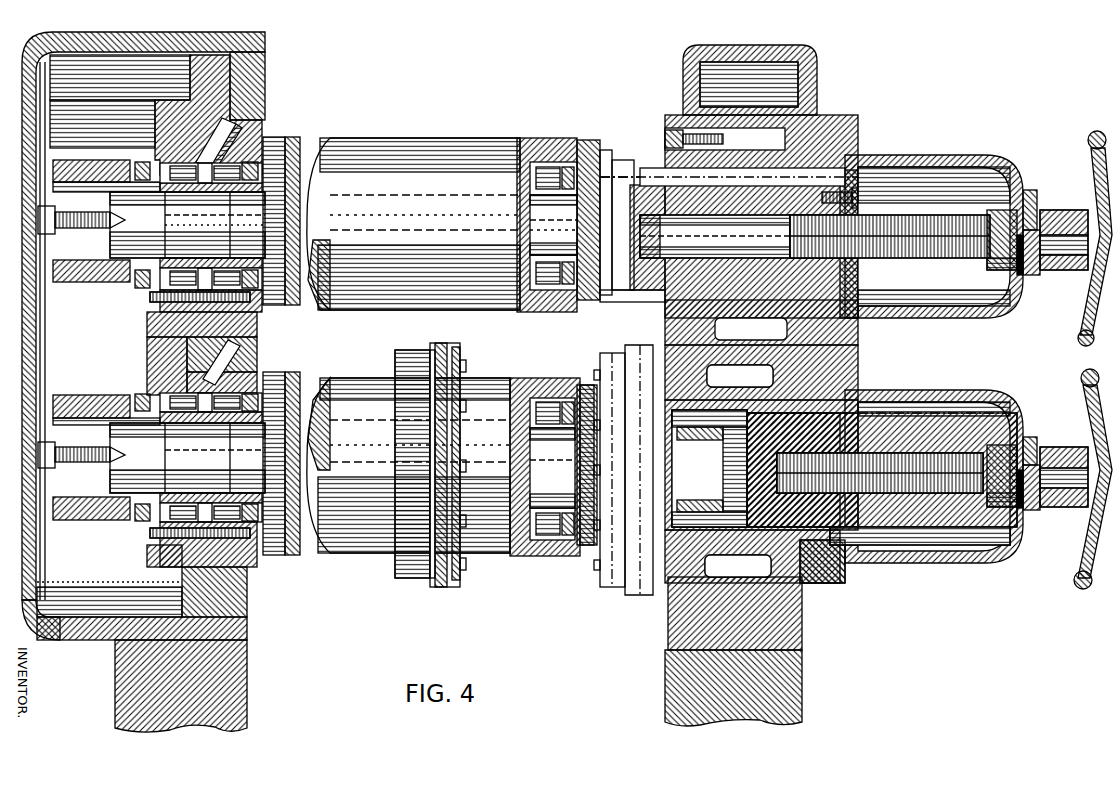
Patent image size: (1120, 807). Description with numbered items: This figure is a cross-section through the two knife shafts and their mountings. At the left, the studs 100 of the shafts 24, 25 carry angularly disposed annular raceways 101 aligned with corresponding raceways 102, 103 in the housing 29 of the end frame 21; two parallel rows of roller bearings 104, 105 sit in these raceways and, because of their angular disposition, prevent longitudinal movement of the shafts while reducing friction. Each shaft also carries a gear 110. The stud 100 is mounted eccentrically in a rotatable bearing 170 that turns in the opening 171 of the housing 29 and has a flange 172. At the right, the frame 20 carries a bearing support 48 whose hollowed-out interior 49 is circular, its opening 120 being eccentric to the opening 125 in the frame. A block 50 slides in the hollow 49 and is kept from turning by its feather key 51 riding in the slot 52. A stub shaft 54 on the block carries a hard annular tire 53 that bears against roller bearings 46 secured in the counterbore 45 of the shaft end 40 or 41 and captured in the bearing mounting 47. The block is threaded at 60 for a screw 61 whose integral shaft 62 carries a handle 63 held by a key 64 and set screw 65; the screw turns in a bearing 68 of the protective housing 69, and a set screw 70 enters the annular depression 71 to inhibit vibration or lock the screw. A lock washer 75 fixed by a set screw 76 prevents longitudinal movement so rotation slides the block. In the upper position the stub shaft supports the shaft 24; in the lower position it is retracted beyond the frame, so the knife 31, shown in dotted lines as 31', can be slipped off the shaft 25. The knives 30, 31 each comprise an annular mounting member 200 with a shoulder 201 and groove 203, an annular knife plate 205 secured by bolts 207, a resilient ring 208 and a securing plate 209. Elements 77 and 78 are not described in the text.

The frame 20 is at (852, 348).
The end frame 21 is at (245, 672).
The shaft 24 is at (283, 318).
The shaft 25 is at (353, 377).
The housing 29 is at (252, 80).
The circular knife 30 is at (621, 182).
The circular knife 31 is at (425, 478).
The clamp plate 31' is at (623, 464).
The end of shaft 40 is at (584, 557).
The end of shaft 41 is at (598, 144).
The counterbore 45 is at (565, 172).
The roller bearings 46 is at (548, 170).
The bearing mounting 47 is at (537, 166).
The bearing support 48 is at (836, 122).
The hollowed out interior 49 is at (812, 580).
The block 50 is at (846, 263).
The feather key 51 is at (653, 163).
The slot 52 is at (703, 203).
The annular ring or tire 53 is at (530, 190).
The stub shaft 54 is at (540, 210).
The threads 60 is at (647, 231).
The screw 61 is at (900, 252).
The shaft 62 is at (1057, 232).
The handle 63 is at (1097, 137).
The key 64 is at (1050, 259).
The set screw 65 is at (1057, 264).
The bearing 68 is at (1020, 272).
The housing 69 is at (960, 157).
The set screw 70 is at (1030, 190).
The annular depression 71 is at (1027, 250).
The lock washer 75 is at (987, 214).
The set screw 76 is at (995, 262).
The flange 77 is at (846, 279).
The set screw 78 is at (860, 197).
The stud 100 is at (222, 212).
The annular raceways 101 is at (197, 178).
The raceway 102 is at (250, 128).
The raceway 103 is at (191, 160).
The roller bearings 104 is at (235, 163).
The roller bearings 105 is at (177, 170).
The gear 110 is at (90, 297).
The opening 120 is at (662, 296).
The opening 125 is at (778, 132).
The rotatable bearing 170 is at (150, 326).
The opening 171 is at (258, 350).
The flange 172 is at (174, 155).
The annular mounting member 200 is at (400, 353).
The shoulder 201 is at (412, 352).
The groove 203 is at (433, 352).
The annular knife plate 205 is at (445, 346).
The bolts 207 is at (465, 408).
The resilient annular ring 208 is at (455, 352).
The securing plate 209 is at (466, 364).